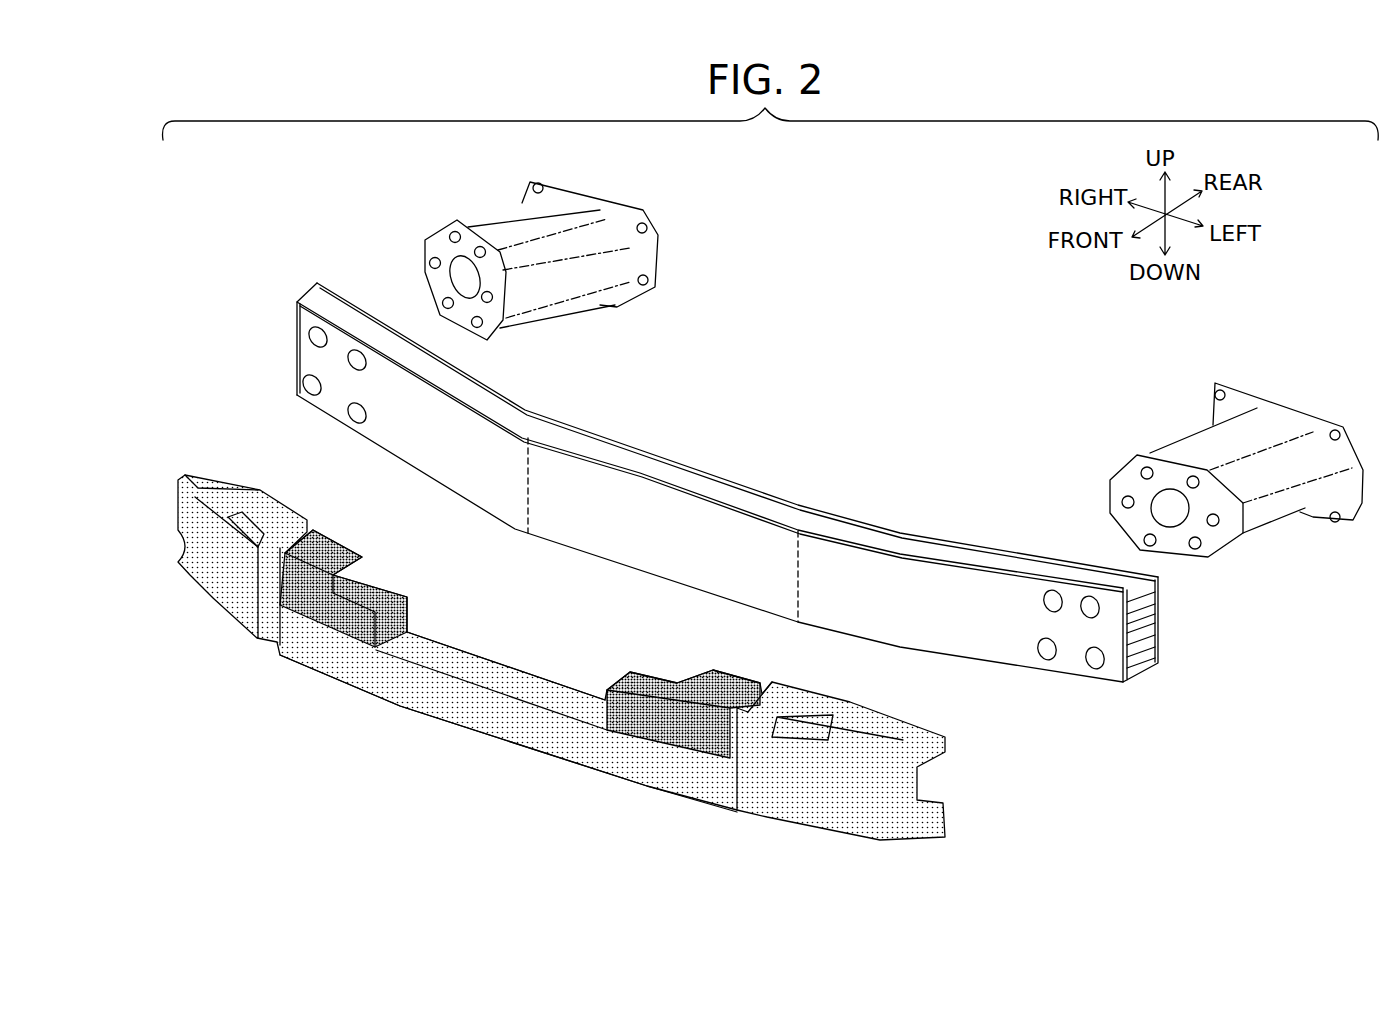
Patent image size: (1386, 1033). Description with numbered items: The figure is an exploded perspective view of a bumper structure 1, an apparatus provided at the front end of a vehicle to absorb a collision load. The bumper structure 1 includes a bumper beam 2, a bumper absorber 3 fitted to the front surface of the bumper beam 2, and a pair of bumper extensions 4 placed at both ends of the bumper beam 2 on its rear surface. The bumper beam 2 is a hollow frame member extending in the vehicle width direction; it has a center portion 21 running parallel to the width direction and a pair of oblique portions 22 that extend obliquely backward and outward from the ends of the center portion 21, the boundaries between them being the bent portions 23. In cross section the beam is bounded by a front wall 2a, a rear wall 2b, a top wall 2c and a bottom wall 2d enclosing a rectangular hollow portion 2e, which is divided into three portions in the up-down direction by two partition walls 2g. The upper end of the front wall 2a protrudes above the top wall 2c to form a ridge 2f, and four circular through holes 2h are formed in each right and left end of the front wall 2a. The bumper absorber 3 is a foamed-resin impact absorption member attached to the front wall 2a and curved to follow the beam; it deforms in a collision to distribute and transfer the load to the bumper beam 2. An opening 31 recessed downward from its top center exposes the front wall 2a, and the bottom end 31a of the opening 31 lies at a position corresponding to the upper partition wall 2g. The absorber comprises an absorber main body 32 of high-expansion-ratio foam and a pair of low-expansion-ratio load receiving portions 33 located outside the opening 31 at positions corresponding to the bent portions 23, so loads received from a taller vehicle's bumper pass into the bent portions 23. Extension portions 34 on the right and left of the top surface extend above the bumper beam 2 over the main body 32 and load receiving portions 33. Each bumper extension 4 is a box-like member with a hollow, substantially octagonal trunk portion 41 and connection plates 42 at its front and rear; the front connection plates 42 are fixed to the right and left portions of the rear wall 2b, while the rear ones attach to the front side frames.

The bumper structure 1 is at (822, 333).
The bumper beam 2 is at (678, 450).
The center portion 21 is at (650, 540).
The oblique portions 22 is at (480, 490).
The bent portions 23 is at (540, 430).
The front wall 2a is at (1117, 630).
The rear wall 2b is at (1150, 630).
The top wall 2c is at (1130, 585).
The bottom wall 2d is at (1140, 680).
The hollow portion 2e is at (1150, 658).
The ridge 2f is at (935, 552).
The partition walls 2g is at (1150, 603).
The circular through holes 2h is at (310, 388).
The bumper absorber 3 is at (395, 718).
The opening 31 is at (462, 665).
The bottom end 31a is at (548, 698).
The absorber main body 32 is at (497, 720).
The load receiving portions 33 is at (325, 608).
The extension portions 34 is at (330, 553).
The bumper extensions 4 is at (490, 205).
The trunk portion 41 is at (560, 290).
The connection plates 42 is at (440, 245).